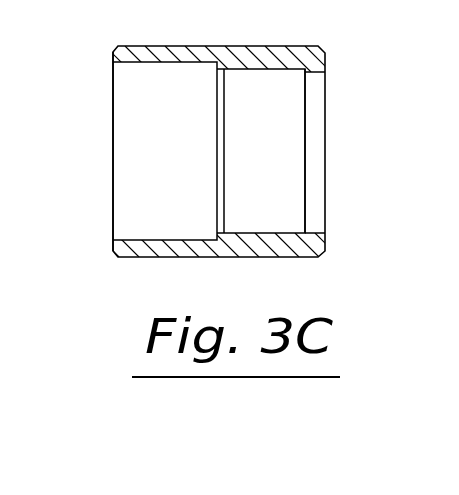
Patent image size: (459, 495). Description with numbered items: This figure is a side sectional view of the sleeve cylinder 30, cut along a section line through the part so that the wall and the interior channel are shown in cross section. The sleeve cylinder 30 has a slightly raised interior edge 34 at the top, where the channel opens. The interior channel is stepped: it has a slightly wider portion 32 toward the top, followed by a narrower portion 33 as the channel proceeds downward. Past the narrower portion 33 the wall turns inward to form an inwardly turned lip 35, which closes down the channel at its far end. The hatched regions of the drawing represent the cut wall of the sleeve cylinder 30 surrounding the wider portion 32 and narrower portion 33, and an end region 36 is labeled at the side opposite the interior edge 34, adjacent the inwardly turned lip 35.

The sleeve cylinder 30 is at (208, 46).
The slightly wider portion 32 is at (158, 156).
The narrower portion 33 is at (272, 156).
The slightly raised interior edge 34 is at (113, 240).
The inwardly turned lip 35 is at (300, 233).
The end wall 36 is at (327, 62).